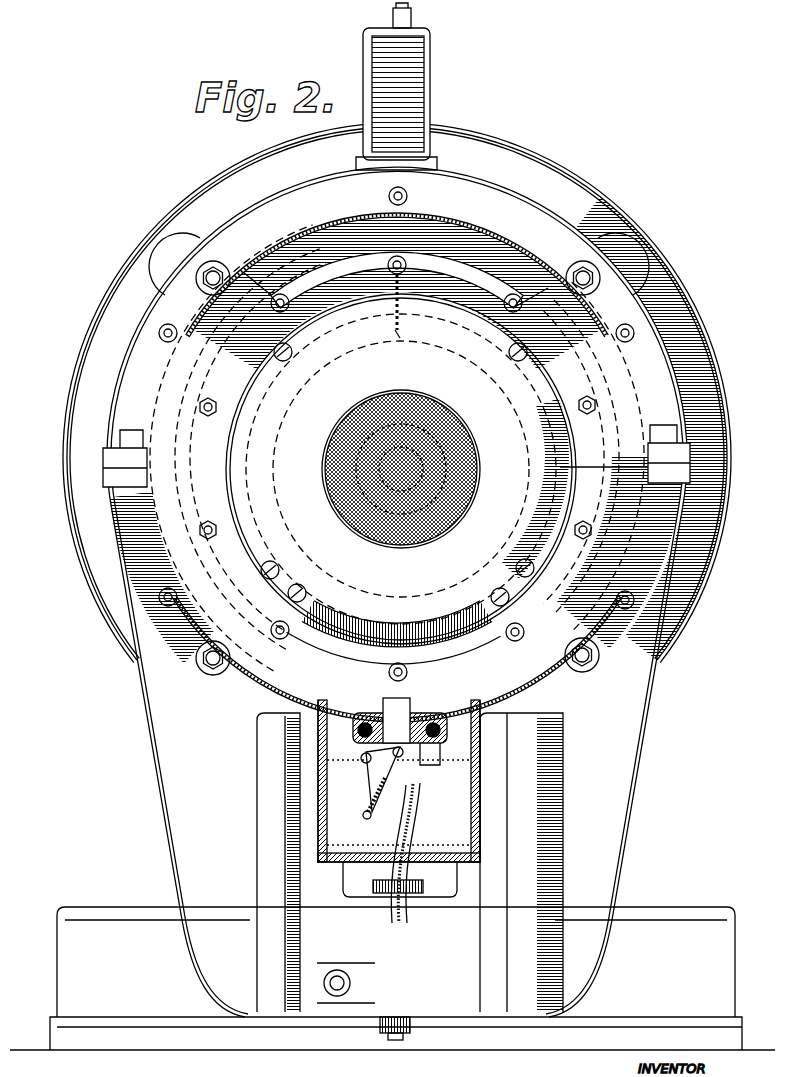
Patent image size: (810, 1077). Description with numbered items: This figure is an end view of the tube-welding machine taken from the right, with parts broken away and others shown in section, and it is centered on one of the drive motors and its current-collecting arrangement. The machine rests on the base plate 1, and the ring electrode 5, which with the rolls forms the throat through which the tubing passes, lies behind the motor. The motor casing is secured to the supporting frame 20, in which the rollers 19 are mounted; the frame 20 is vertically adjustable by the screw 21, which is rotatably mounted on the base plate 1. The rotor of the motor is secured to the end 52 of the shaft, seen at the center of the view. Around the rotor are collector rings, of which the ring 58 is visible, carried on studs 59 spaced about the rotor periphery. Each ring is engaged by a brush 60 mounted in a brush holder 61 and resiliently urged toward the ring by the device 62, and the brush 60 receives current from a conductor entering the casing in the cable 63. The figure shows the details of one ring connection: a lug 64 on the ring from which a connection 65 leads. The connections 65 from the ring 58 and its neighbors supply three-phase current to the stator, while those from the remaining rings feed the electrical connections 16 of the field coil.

The base plate 1 is at (683, 906).
The ring electrode 5 is at (689, 348).
The electrical connections 16 is at (289, 633).
The rollers 19 is at (176, 262).
The supporting frame 20 is at (408, 109).
The screw 21 is at (392, 1042).
The end of the shaft 52 is at (428, 397).
The collector ring 58 is at (341, 256).
The studs 59 is at (279, 297).
The brush 60 is at (400, 731).
The brush holder 61 is at (366, 722).
The resilient device 62 is at (373, 768).
The cable 63 is at (408, 909).
The lug 64 is at (402, 256).
The connection 65 is at (404, 290).